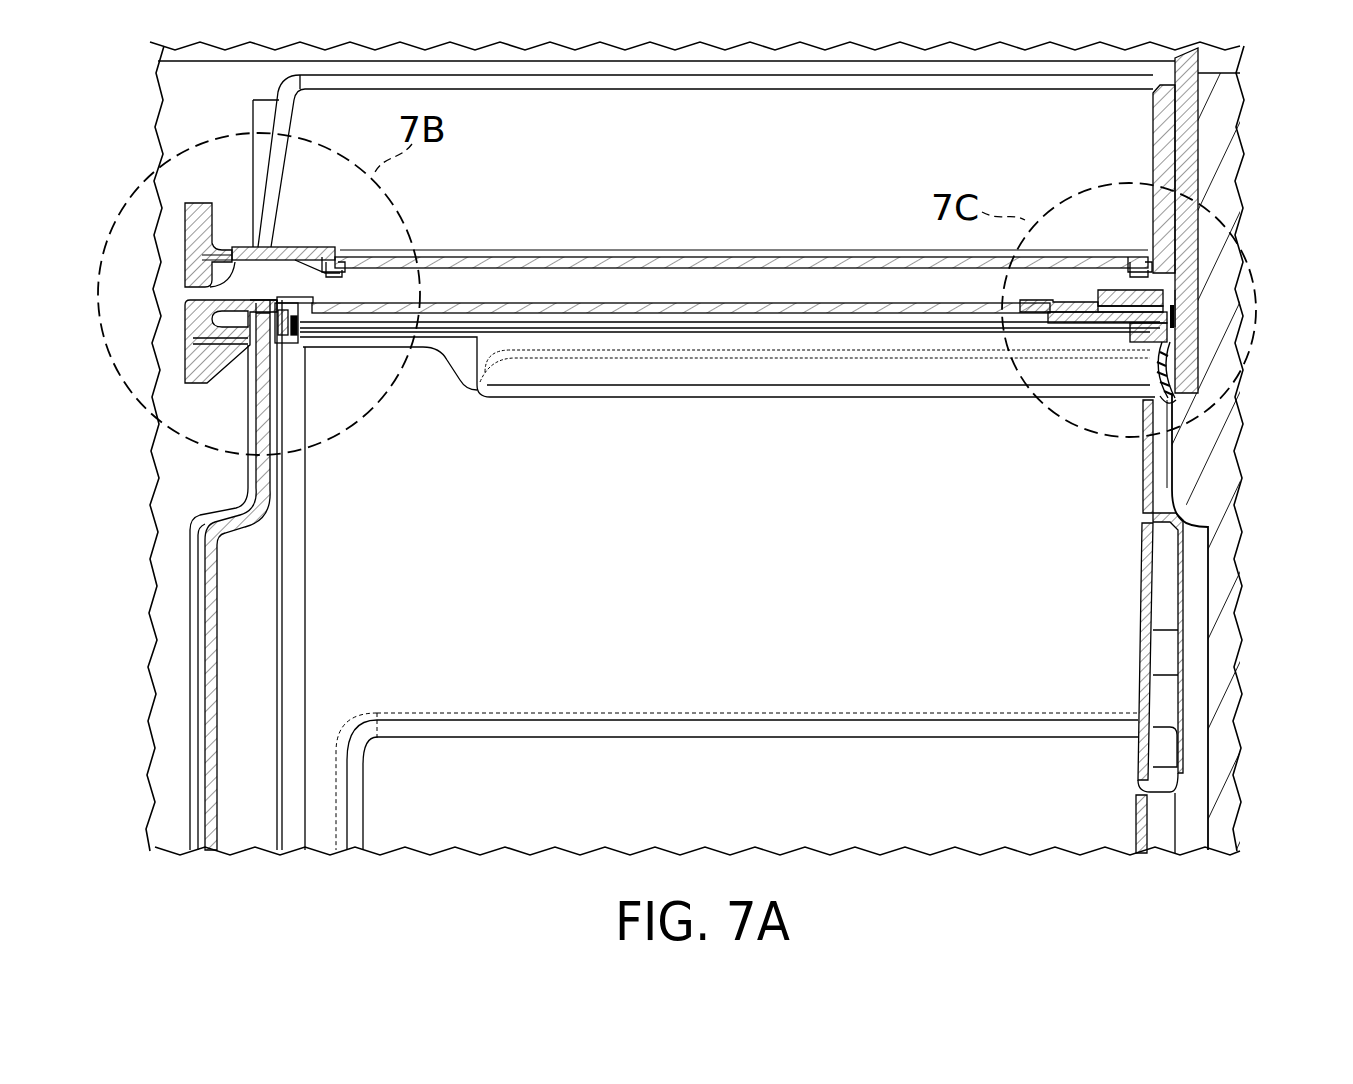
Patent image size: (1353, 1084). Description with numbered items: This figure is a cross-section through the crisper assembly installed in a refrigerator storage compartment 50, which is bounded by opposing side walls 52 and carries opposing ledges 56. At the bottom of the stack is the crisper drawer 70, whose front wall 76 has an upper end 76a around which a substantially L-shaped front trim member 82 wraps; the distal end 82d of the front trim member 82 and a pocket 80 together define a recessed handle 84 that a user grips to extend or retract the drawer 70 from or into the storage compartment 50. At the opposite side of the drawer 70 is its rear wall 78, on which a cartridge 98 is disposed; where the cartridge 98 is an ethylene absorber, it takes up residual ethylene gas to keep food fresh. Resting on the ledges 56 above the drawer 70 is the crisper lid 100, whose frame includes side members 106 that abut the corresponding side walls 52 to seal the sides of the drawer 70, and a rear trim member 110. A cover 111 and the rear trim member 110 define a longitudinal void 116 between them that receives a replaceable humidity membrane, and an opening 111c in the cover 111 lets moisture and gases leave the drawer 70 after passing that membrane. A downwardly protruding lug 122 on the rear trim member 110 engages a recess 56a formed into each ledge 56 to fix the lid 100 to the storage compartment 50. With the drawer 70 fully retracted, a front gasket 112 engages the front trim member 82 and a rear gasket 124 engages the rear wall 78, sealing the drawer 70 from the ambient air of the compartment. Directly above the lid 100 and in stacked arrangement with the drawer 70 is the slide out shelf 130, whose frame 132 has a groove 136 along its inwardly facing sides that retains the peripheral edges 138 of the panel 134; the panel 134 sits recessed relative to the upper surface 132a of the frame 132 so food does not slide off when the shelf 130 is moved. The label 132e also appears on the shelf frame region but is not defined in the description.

The storage compartment 50 is at (190, 97).
The side wall 52 is at (737, 685).
The ledge 56 is at (815, 375).
The recess 56a is at (1140, 347).
The crisper drawer 70 is at (1210, 485).
The front wall 76 is at (170, 707).
The upper end 76a is at (268, 310).
The rear wall 78 is at (1143, 507).
The pocket 80 is at (222, 469).
The front trim member 82 is at (188, 314).
The distal end 82d is at (188, 384).
The recessed handle 84 is at (170, 440).
The cartridge 98 is at (1140, 637).
The crisper lid 100 is at (1222, 305).
The side member 106 is at (467, 320).
The rear trim member 110 is at (1165, 322).
The cover 111 is at (1168, 305).
The opening 111c is at (1095, 294).
The front gasket 112 is at (285, 344).
The longitudinal void 116 is at (1137, 305).
The lug 122 is at (1128, 338).
The rear gasket 124 is at (1162, 400).
The slide out shelf 130 is at (1204, 162).
The frame 132 is at (243, 240).
The upper surface 132a is at (292, 250).
The trim wall 132e is at (1140, 258).
The panel 134 is at (603, 258).
The groove 136 is at (345, 256).
The peripheral edge 138 is at (340, 272).